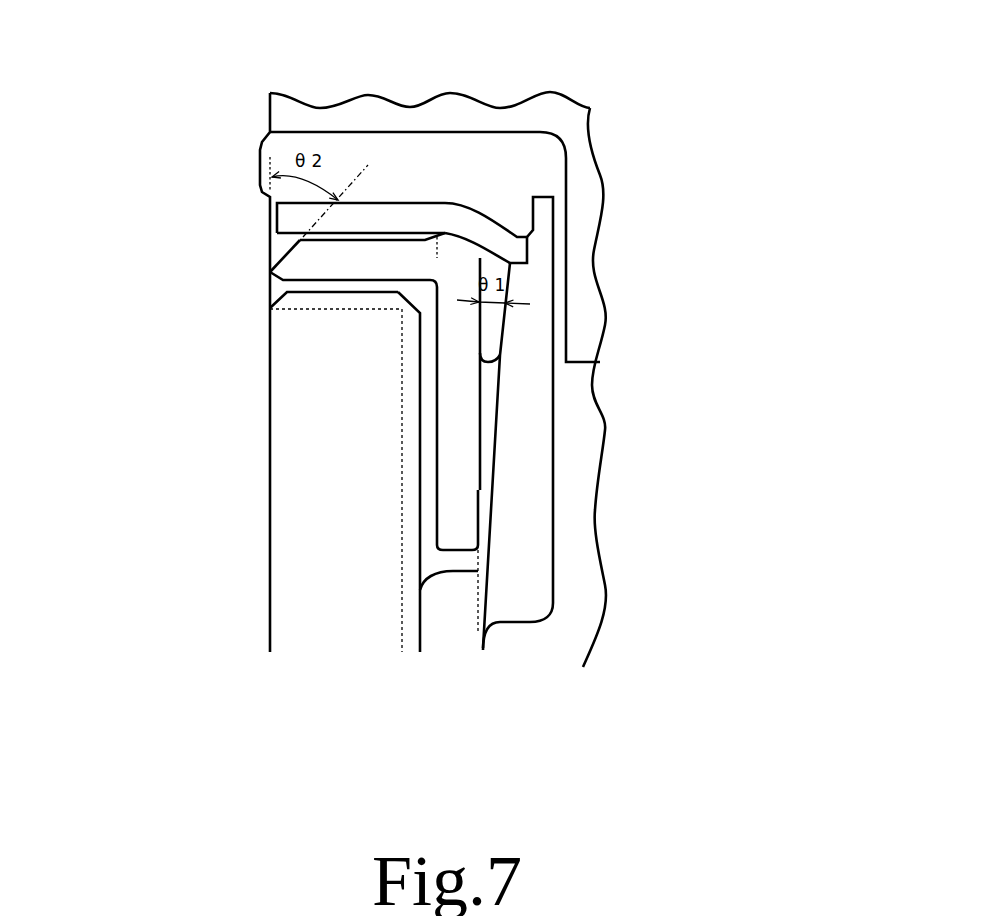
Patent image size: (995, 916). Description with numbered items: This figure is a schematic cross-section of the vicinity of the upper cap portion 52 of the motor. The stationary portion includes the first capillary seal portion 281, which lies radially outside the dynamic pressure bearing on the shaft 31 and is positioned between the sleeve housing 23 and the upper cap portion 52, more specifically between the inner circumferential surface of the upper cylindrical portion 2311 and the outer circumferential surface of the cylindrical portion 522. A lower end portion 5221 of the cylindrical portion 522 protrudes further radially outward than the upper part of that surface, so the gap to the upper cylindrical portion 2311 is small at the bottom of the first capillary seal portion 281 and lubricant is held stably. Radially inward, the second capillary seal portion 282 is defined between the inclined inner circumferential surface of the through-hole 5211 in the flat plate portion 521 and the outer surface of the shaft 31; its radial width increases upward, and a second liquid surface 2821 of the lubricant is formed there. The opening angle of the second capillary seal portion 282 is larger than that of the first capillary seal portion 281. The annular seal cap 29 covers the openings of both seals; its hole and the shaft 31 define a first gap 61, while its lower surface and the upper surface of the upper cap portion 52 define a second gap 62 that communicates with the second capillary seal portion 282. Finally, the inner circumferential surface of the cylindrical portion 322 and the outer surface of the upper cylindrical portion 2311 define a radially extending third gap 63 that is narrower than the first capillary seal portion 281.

The upper cap portion 52 is at (435, 136).
The seal cap 29 is at (387, 217).
The flat plate portion 521 is at (413, 260).
The second gap 62 is at (432, 232).
The first gap 61 is at (268, 217).
The second liquid surface 2821 is at (283, 256).
The second capillary seal portion 282 is at (237, 265).
The through-hole 5211 is at (269, 296).
The shaft 31 is at (253, 462).
The cylindrical portion 322 is at (578, 223).
The third gap 63 is at (560, 268).
The cylindrical portion 522 is at (455, 407).
The first capillary seal portion 281 is at (490, 423).
The sleeve housing 23 is at (634, 525).
The upper cylindrical portion 2311 is at (527, 477).
The lower end portion 5221 is at (478, 512).